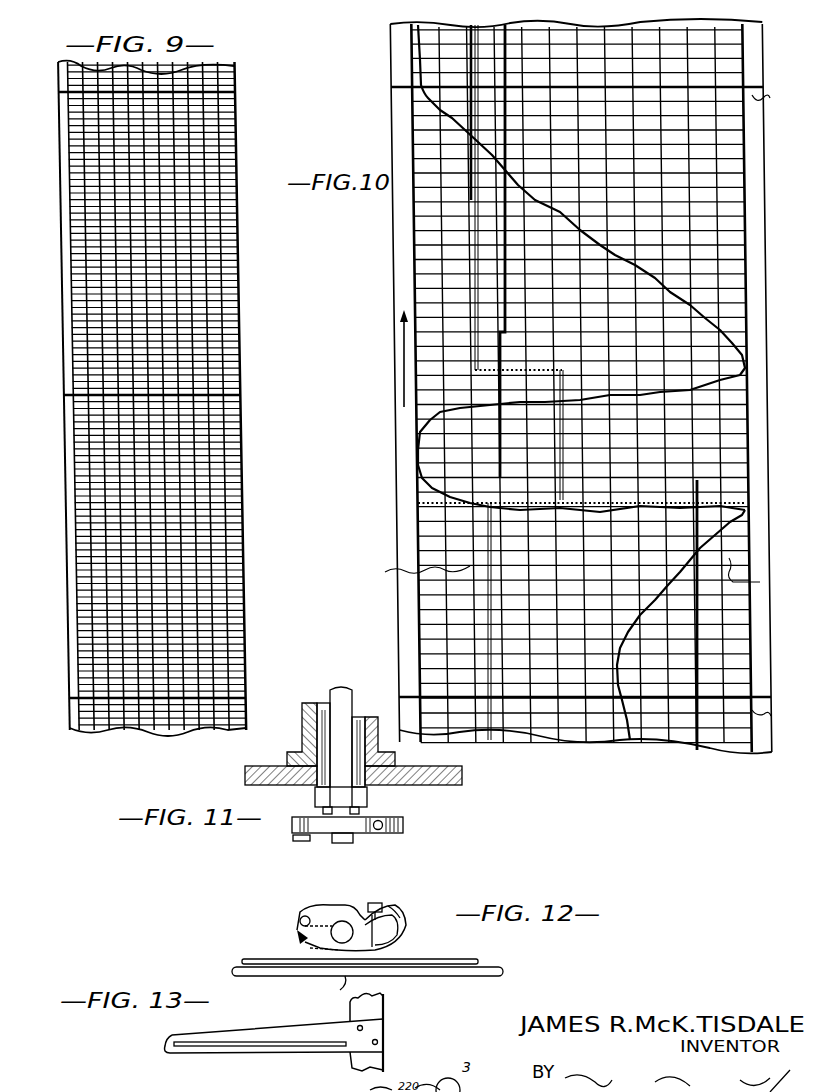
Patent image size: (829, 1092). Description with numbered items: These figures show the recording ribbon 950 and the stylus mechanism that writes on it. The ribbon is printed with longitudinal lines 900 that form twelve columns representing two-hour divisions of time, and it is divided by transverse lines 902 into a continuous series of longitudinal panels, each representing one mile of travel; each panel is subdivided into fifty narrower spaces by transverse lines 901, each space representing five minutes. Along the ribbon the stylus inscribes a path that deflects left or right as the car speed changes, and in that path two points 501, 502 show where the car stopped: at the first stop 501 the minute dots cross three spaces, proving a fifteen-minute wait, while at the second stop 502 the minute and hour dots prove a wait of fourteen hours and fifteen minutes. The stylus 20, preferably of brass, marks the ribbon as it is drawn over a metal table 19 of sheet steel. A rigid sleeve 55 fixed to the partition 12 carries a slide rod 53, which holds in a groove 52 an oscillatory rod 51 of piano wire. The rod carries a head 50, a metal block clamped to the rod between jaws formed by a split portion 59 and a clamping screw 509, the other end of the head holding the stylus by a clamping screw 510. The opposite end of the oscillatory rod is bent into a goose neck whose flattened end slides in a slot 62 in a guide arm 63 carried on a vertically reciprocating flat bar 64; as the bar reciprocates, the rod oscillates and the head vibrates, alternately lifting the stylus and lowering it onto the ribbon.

In FIG. 9, the recording chart strip 950 is at (242, 420).
In FIG. 10, the recording chart strip 950 is at (395, 452).
In FIG. 12, the recording chart strip 950 is at (475, 967).
In FIG. 10, the transverse lines 902 is at (778, 408).
In FIG. 10, the first stop point 501 is at (748, 368).
In FIG. 10, the second stop point 502 is at (752, 512).
In FIG. 10, the longitudinal lines 900 is at (407, 572).
In FIG. 10, the transverse lines 901 is at (769, 574).
In FIG. 11, the partition 12 is at (280, 766).
In FIG. 11, the rigid sleeve 55 is at (308, 710).
In FIG. 11, the groove 52 is at (372, 718).
In FIG. 11, the slide rod 53 is at (318, 728).
In FIG. 11, the oscillatory rod 51 is at (336, 690).
In FIG. 12, the oscillatory rod 51 is at (345, 912).
In FIG. 11, the head 50 is at (365, 836).
In FIG. 12, the head 50 is at (405, 930).
In FIG. 11, the split portion 59 is at (403, 825).
In FIG. 12, the split portion 59 is at (404, 912).
In FIG. 11, the clamping screw 510 is at (300, 841).
In FIG. 12, the clamping screw 510 is at (306, 916).
In FIG. 12, the stylus 20 is at (298, 932).
In FIG. 12, the clamping screw 509 is at (376, 903).
In FIG. 12, the metal table 19 is at (333, 991).
In FIG. 13, the slot 62 is at (274, 1049).
In FIG. 13, the guide arm 63 is at (268, 1050).
In FIG. 13, the flat bar 64 is at (383, 1004).